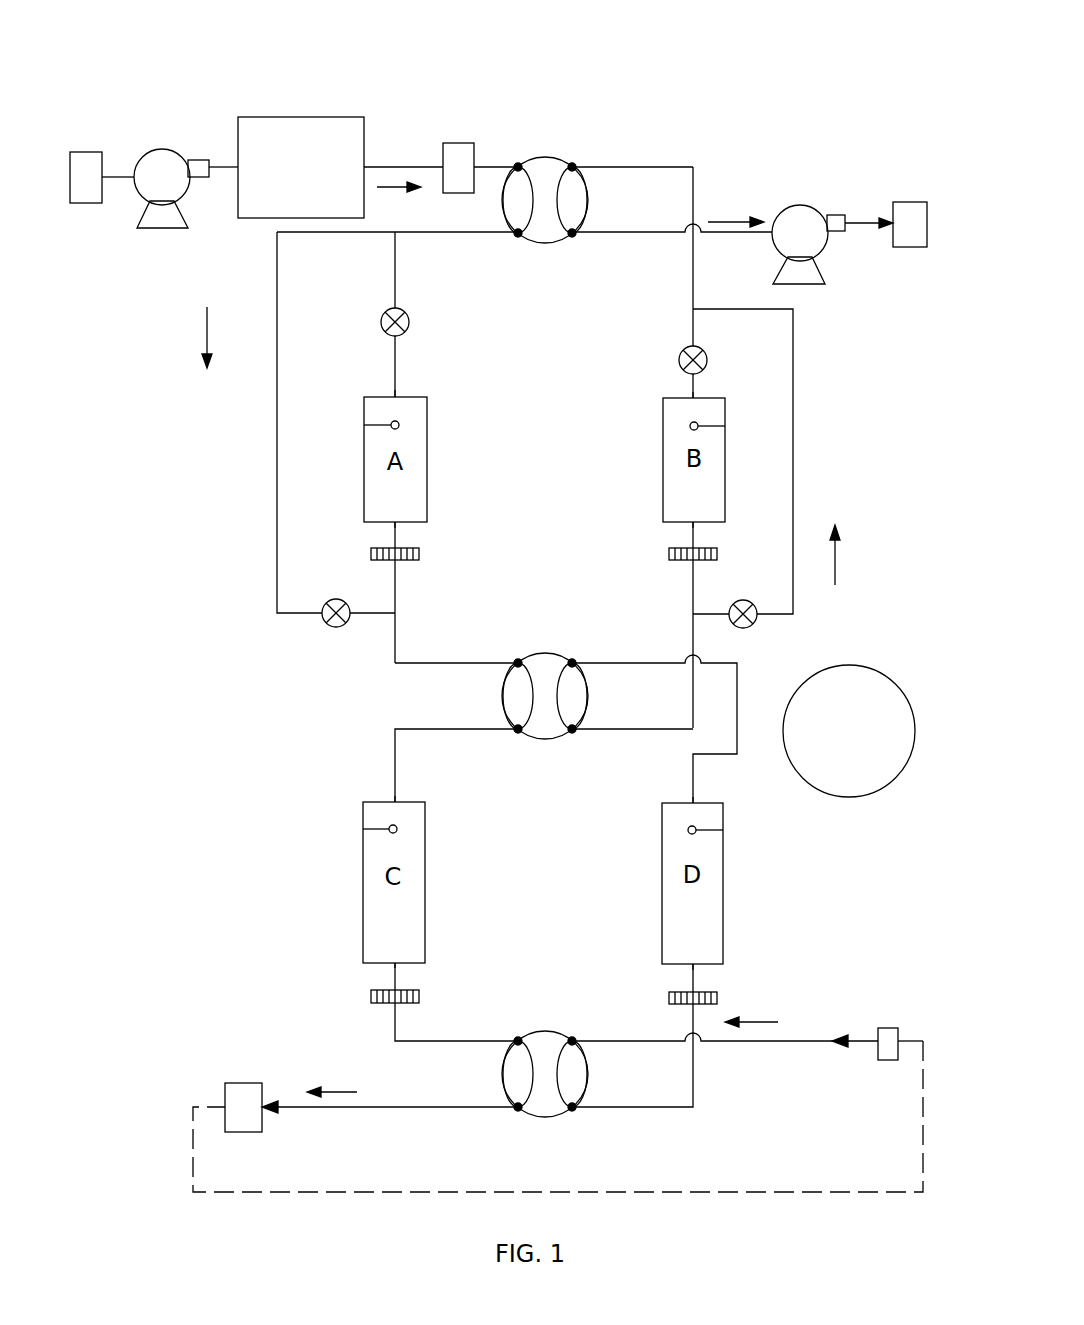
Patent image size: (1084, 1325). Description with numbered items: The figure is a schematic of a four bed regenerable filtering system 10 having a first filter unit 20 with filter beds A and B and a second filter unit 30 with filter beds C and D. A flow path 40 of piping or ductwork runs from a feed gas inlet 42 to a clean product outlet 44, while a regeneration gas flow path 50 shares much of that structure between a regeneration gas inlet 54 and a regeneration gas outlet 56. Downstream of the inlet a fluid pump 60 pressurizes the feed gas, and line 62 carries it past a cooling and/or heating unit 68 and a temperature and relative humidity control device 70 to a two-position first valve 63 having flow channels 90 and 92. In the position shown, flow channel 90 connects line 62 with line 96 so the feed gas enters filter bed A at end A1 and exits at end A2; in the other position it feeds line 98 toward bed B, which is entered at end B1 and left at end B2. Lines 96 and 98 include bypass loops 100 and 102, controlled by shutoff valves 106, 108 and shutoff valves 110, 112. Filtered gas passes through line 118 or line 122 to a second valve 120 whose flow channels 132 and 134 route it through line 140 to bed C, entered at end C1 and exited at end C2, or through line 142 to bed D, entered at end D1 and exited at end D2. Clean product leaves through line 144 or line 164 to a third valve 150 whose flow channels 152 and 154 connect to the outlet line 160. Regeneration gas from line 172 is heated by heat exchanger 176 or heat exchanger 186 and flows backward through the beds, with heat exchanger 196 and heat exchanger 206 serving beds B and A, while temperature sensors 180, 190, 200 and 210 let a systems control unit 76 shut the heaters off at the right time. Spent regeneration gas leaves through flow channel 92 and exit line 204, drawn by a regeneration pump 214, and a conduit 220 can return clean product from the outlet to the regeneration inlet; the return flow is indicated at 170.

The filtering system 10 is at (432, 66).
The first filter unit 20 is at (815, 342).
The second filter unit 30 is at (752, 872).
The flow path 40 is at (306, 644).
The feed gas inlet 42 is at (85, 203).
The clean product outlet 44 is at (243, 1083).
The regeneration gas flow path 50 is at (791, 612).
The regeneration gas inlet 54 is at (888, 1062).
The regeneration gas outlet 56 is at (908, 202).
The fluid pump 60 is at (162, 150).
The line 62 is at (225, 163).
The first valve 63 is at (545, 157).
The cooling and/or heating unit 68 is at (278, 117).
The temperature and relative humidity control device 70 is at (456, 143).
The systems control unit 76 is at (855, 797).
The flow channel 90 is at (528, 200).
The flow channel 92 is at (562, 200).
The line 96 is at (428, 233).
The line 98 is at (658, 167).
The bypass loop 100 is at (277, 440).
The bypass loop 102 is at (793, 465).
The shutoff valve 106 is at (410, 322).
The shutoff valve 108 is at (334, 627).
The shutoff valve 110 is at (683, 352).
The shutoff valve 112 is at (753, 625).
The line 118 is at (397, 538).
The second valve 120 is at (547, 722).
The line 122 is at (696, 540).
The flow channel 132 is at (532, 693).
The flow channel 134 is at (558, 693).
The line 140 is at (410, 731).
The line 142 is at (655, 662).
The line 144 is at (393, 1020).
The third valve 150 is at (540, 1112).
The flow channel 152 is at (532, 1072).
The flow channel 154 is at (558, 1072).
The outlet line 160 is at (432, 1110).
The line 164 is at (695, 978).
The second fluid return flow 170 is at (815, 1088).
The regeneration gas line 172 is at (825, 1040).
The heat exchanger 176 is at (668, 996).
The temperature sensor 180 is at (710, 828).
The heat exchanger 186 is at (370, 995).
The temperature sensor 190 is at (375, 828).
The heat exchanger 196 is at (717, 555).
The temperature sensor 200 is at (712, 424).
The exit line 204 is at (590, 233).
The heat exchanger 206 is at (371, 555).
The temperature sensor 210 is at (374, 424).
The regeneration pump 214 is at (805, 243).
The conduit 220 is at (800, 1195).
The end of filter bed A A1 is at (395, 397).
The end of filter bed A A2 is at (395, 522).
The end of filter bed B B1 is at (694, 398).
The end of filter bed B B2 is at (694, 522).
The end of filter bed C C1 is at (395, 802).
The end of filter bed C C2 is at (395, 963).
The end of filter bed D D1 is at (693, 803).
The end of filter bed D D2 is at (693, 964).